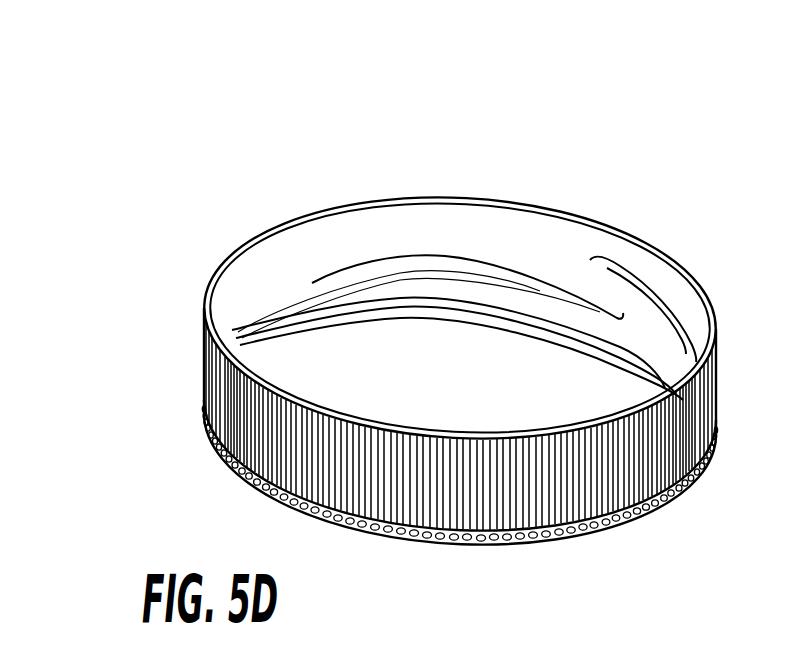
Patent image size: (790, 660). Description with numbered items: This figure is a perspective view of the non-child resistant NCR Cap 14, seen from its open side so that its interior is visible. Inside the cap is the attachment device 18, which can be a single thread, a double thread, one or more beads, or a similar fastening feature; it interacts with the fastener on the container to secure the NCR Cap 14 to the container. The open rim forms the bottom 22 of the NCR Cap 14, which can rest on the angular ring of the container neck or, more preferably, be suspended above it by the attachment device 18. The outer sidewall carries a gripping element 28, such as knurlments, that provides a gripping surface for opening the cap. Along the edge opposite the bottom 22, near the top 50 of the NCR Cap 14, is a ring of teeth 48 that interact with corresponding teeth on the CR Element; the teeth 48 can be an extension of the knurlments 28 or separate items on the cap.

The NCR Cap 14 is at (388, 338).
The attachment device 18 is at (464, 229).
The bottom 22 is at (460, 291).
The gripping element 28 is at (435, 419).
The teeth 48 is at (459, 505).
The top 50 is at (459, 358).